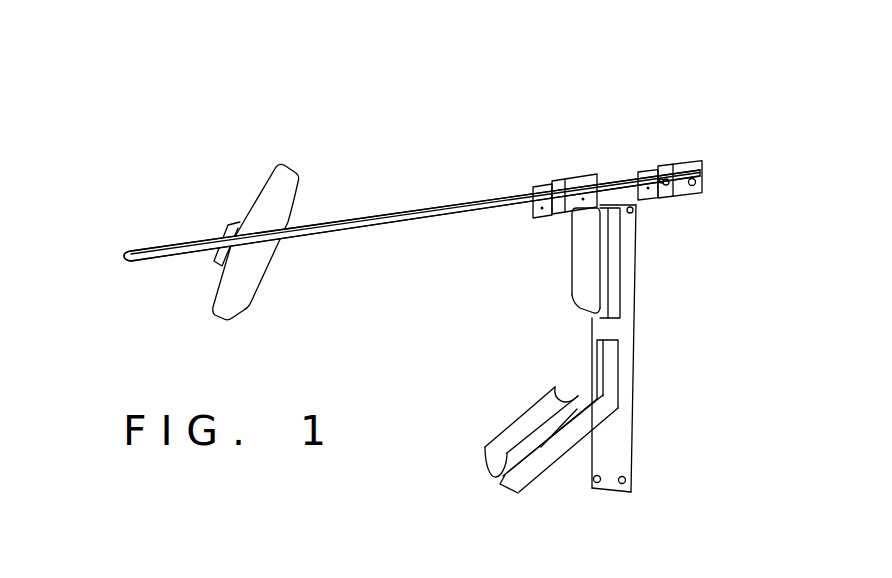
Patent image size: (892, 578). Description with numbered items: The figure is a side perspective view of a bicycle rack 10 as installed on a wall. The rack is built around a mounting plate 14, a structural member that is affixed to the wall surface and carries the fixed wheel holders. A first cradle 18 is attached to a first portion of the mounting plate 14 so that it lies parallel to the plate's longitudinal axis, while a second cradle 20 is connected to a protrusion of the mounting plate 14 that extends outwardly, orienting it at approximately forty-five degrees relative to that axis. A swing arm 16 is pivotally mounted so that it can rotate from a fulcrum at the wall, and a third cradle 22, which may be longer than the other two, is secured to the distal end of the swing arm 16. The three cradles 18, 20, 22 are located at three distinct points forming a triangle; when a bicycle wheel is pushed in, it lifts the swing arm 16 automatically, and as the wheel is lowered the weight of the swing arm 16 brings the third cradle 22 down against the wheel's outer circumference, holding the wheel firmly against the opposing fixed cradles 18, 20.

The bicycle rack 10 is at (712, 97).
The mounting plate 14 is at (655, 352).
The swing arm 16 is at (138, 233).
The first cradle 18 is at (616, 264).
The second cradle 20 is at (472, 471).
The third cradle 22 is at (249, 171).